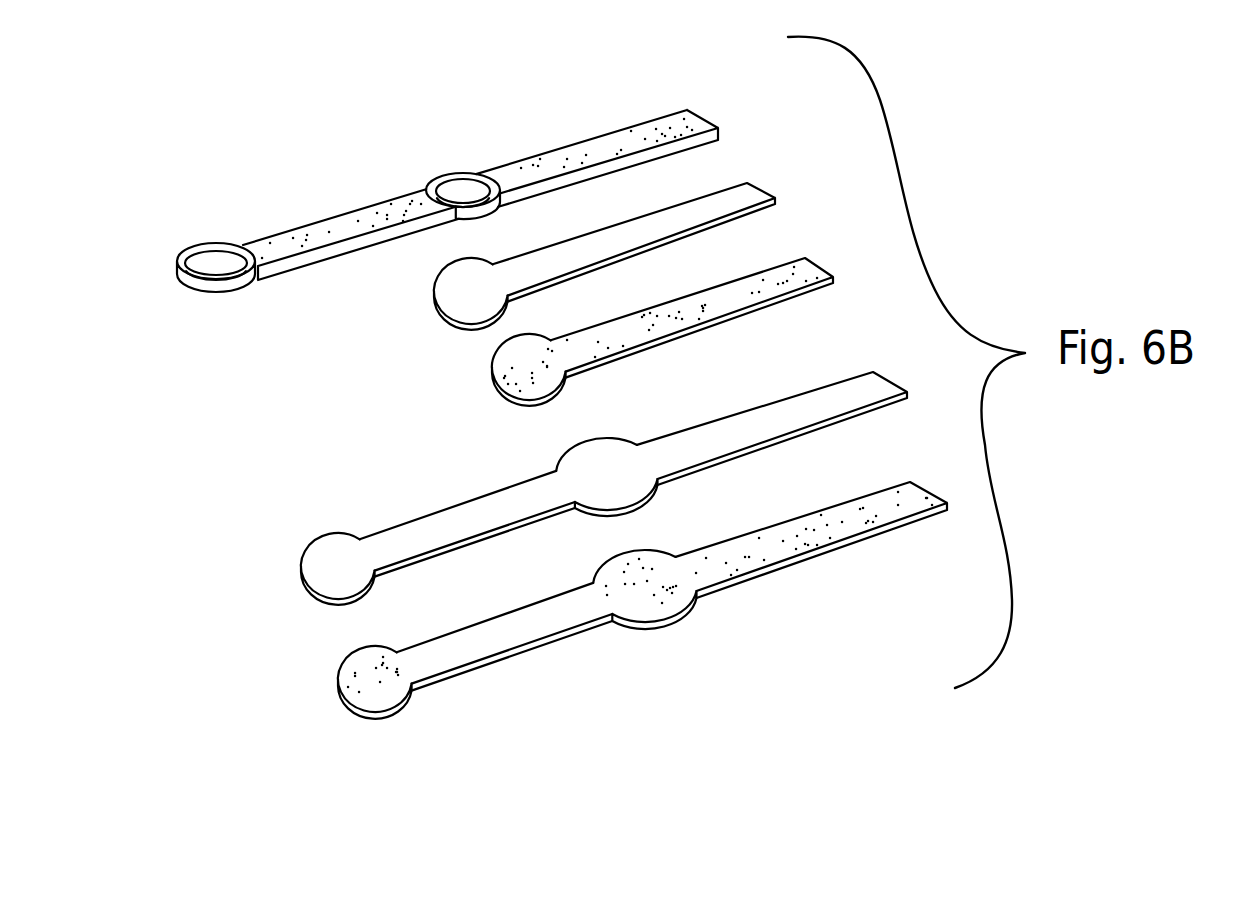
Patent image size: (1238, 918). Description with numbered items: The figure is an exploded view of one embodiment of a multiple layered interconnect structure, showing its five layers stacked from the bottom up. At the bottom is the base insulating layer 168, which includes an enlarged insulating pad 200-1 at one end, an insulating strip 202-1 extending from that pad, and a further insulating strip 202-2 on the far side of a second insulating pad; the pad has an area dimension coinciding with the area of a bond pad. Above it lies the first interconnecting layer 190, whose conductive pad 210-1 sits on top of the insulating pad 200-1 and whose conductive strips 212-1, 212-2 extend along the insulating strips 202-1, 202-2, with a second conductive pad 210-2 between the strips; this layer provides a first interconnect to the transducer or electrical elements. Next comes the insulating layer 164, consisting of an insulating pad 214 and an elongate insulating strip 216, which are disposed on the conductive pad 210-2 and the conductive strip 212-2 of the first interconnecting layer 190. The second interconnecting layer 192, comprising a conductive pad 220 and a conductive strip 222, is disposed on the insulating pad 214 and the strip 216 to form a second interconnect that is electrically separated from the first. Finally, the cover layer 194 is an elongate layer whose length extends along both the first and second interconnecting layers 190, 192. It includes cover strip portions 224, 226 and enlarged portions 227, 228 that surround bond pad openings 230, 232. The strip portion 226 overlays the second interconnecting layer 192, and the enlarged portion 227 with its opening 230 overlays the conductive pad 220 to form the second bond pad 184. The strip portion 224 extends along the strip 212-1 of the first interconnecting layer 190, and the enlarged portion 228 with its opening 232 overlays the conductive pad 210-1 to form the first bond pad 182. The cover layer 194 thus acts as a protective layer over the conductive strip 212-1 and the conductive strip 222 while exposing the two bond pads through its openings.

The cover layer 194 is at (447, 191).
The strip portion 226 is at (653, 119).
The strip portion 224 is at (285, 237).
The enlarged portion 227 is at (491, 172).
The enlarged portion 228 is at (242, 256).
The bond pad opening 230 is at (488, 204).
The bond pad opening 232 is at (222, 273).
The second bond pad 184 is at (580, 236).
The conductive strip 222 is at (590, 233).
The second interconnecting layer 192 is at (590, 248).
The conductive pad 220 is at (438, 296).
The elongate insulating strip 216 is at (639, 311).
The insulating layer 164 is at (690, 303).
The insulating pad 214 is at (510, 370).
The first bond pad 182 is at (555, 464).
The first interconnecting layer 190 is at (591, 464).
The conductive strip 212-2 is at (698, 428).
The conductive pad 210-2 is at (598, 467).
The conductive strip 212-1 is at (427, 525).
The conductive pad 210-1 is at (322, 547).
The base insulating layer 168 is at (642, 618).
The insulating strip 202-2 is at (668, 620).
The insulating strip 202-1 is at (538, 638).
The insulating pad 200-1 is at (375, 677).